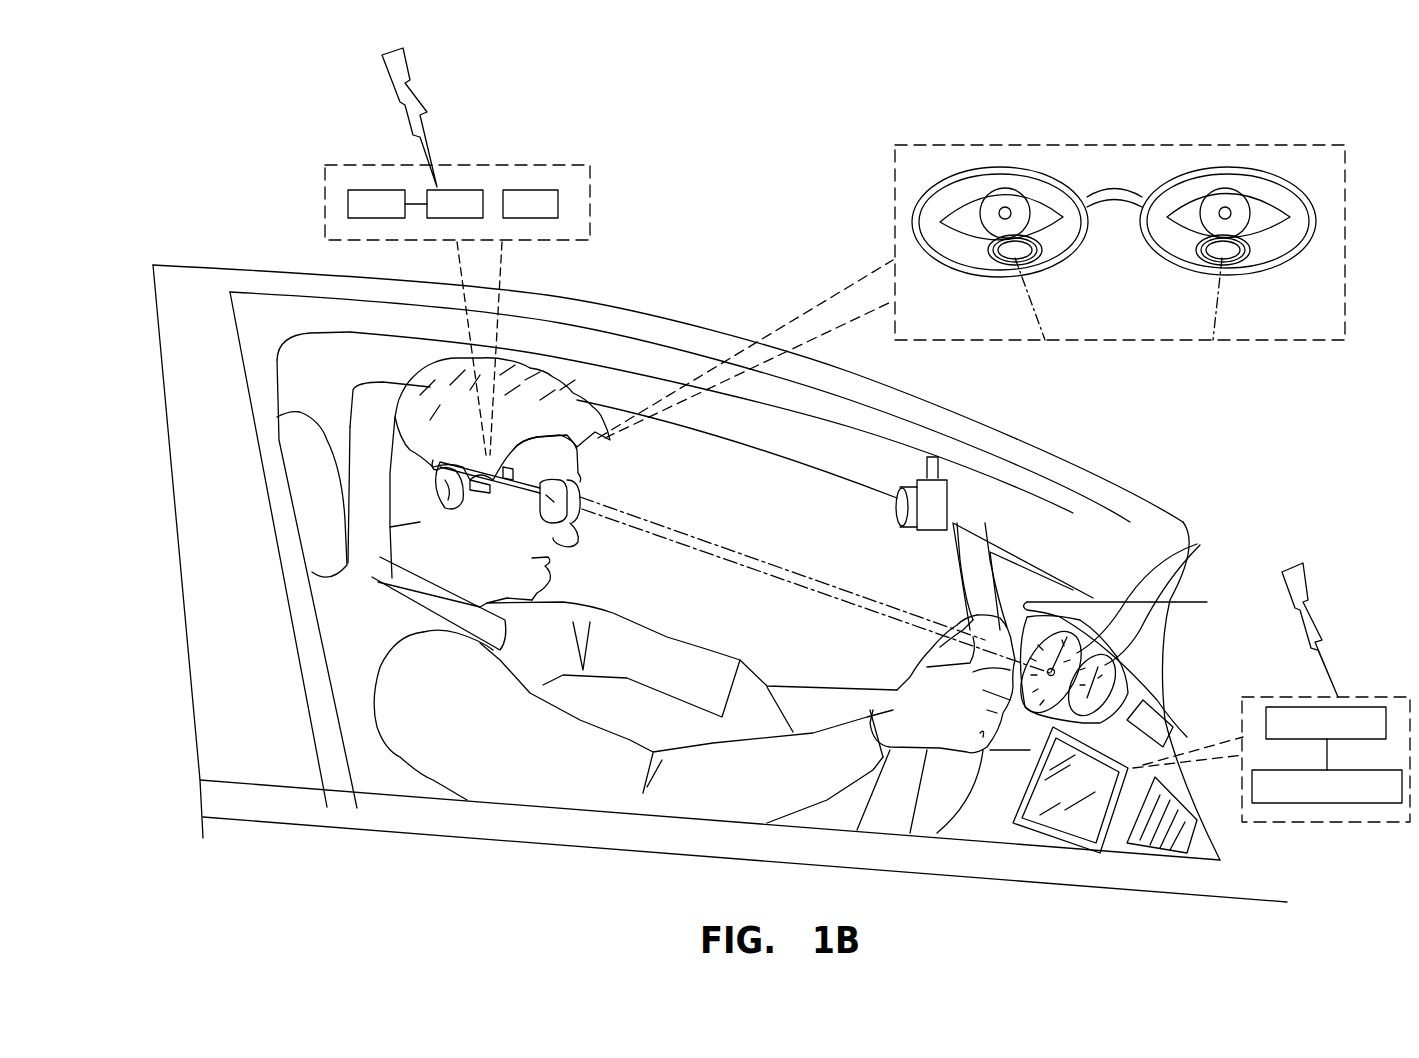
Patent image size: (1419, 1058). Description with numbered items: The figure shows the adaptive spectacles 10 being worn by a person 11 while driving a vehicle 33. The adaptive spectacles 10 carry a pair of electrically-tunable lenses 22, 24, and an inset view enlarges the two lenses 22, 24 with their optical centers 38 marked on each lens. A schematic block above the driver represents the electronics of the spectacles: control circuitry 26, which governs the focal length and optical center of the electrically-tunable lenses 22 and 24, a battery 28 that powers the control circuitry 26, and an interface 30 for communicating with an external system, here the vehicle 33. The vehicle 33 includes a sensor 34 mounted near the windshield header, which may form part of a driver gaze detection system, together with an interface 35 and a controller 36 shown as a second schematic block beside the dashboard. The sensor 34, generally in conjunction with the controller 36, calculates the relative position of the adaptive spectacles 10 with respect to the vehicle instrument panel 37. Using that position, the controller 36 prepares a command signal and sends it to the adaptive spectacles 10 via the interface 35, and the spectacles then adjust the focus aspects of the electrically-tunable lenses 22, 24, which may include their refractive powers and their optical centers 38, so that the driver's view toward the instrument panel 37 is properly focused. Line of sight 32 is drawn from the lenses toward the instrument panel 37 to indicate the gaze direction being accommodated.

The adaptive spectacles 10 is at (593, 465).
The person 11 is at (432, 370).
The electrically-tunable lens 22 is at (548, 522).
The electrically-tunable lens 24 is at (1283, 193).
The control circuitry 26 is at (380, 190).
The battery 28 is at (522, 190).
The interface 30 is at (450, 190).
The line of sight 32 is at (745, 533).
The vehicle 33 is at (172, 490).
The sensor 34 is at (950, 505).
The interface 35 is at (1275, 705).
The controller 36 is at (1272, 805).
The vehicle instrument panel 37 is at (1197, 544).
The optical center 38 is at (1003, 262).